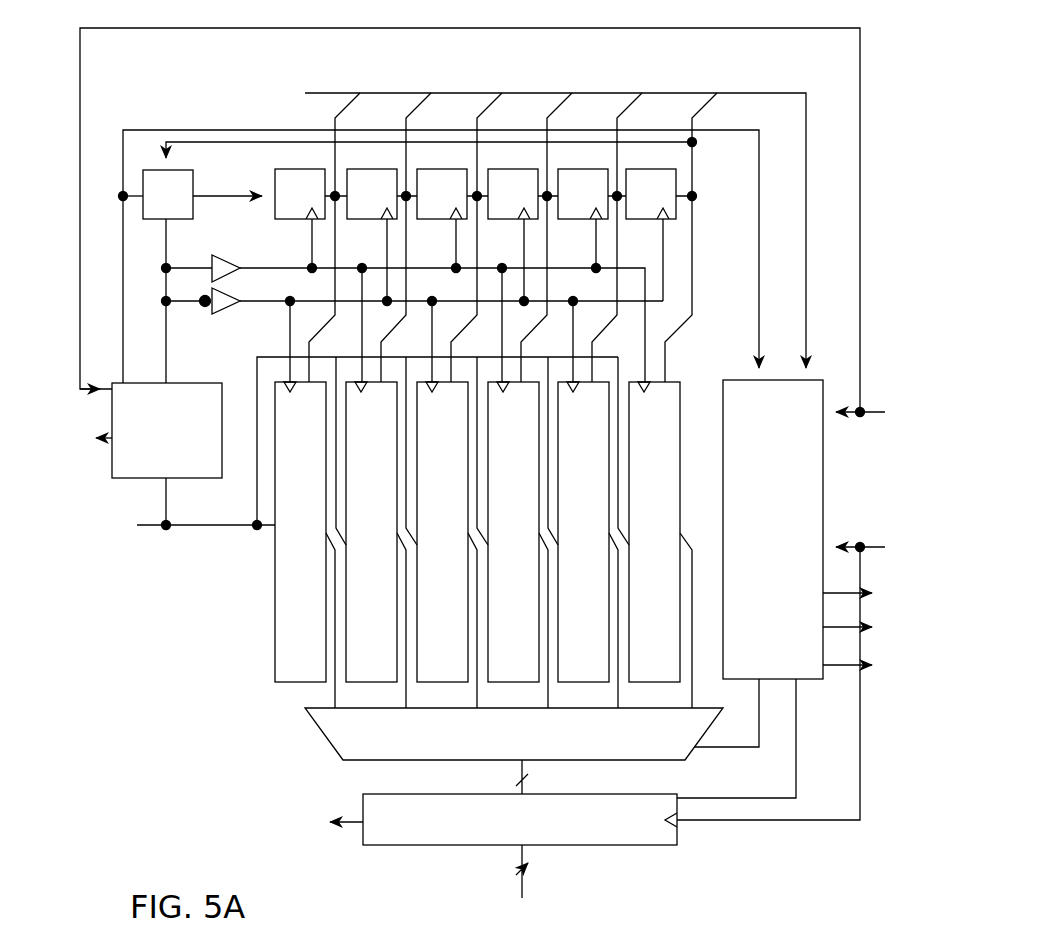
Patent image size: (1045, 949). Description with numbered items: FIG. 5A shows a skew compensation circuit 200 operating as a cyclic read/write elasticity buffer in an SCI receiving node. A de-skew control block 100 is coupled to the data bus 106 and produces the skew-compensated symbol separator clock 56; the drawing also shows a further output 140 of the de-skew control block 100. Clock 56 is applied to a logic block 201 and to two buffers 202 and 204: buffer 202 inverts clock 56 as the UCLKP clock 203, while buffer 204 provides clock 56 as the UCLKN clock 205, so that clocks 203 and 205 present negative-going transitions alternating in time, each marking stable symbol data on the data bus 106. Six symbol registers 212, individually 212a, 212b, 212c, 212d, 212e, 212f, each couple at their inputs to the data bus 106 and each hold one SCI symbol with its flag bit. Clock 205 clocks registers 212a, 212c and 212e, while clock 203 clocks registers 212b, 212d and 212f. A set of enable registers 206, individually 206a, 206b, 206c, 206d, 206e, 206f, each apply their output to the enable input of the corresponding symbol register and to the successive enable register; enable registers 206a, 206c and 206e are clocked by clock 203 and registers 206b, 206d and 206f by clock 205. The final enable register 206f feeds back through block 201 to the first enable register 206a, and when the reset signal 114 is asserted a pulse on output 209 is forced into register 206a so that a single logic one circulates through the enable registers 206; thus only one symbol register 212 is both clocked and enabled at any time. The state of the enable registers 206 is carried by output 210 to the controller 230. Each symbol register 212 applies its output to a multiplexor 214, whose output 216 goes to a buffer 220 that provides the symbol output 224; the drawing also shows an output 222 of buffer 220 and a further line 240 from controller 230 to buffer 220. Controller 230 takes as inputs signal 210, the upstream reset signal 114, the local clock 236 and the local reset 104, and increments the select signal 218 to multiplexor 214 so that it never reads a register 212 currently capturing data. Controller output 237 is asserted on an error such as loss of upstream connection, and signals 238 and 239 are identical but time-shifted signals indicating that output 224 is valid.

The symbol separator clock 56 is at (163, 257).
The de-skew control block 100 is at (105, 477).
The local reset 104 is at (80, 300).
The data bus 106 is at (143, 528).
The reset signal 114 is at (140, 130).
The uso output 140 is at (104, 438).
The receiver circuit 200 is at (180, 633).
The logic block 201 is at (143, 173).
The buffer 202 is at (215, 260).
The UCLKP clock 203 is at (340, 266).
The buffer 204 is at (220, 314).
The UCLKN clock 205 is at (357, 303).
The enable registers 206 is at (268, 158).
The enable register 206a is at (276, 169).
The enable register 206b is at (348, 169).
The enable register 206c is at (418, 169).
The enable register 206d is at (489, 169).
The enable register 206e is at (559, 169).
The enable register 206f is at (628, 169).
The output 209 is at (212, 200).
The output of enable registers 210 is at (806, 242).
The symbol registers 212 is at (262, 633).
The symbol register 212a is at (284, 683).
The symbol register 212b is at (355, 683).
The symbol register 212c is at (426, 683).
The symbol register 212d is at (497, 683).
The symbol register 212e is at (567, 683).
The symbol register 212f is at (638, 683).
The multiplexor 214 is at (305, 717).
The multiplexor output 216 is at (522, 770).
The select input 218 is at (722, 750).
The buffer 220 is at (415, 852).
The nso output 222 is at (348, 824).
The output 224 is at (522, 870).
The controller 230 is at (773, 529).
The local clock 236 is at (873, 547).
The error output 237 is at (868, 593).
The output valid signal 238 is at (868, 627).
The delayed output valid signal 239 is at (868, 665).
The shift enable line 240 is at (796, 745).